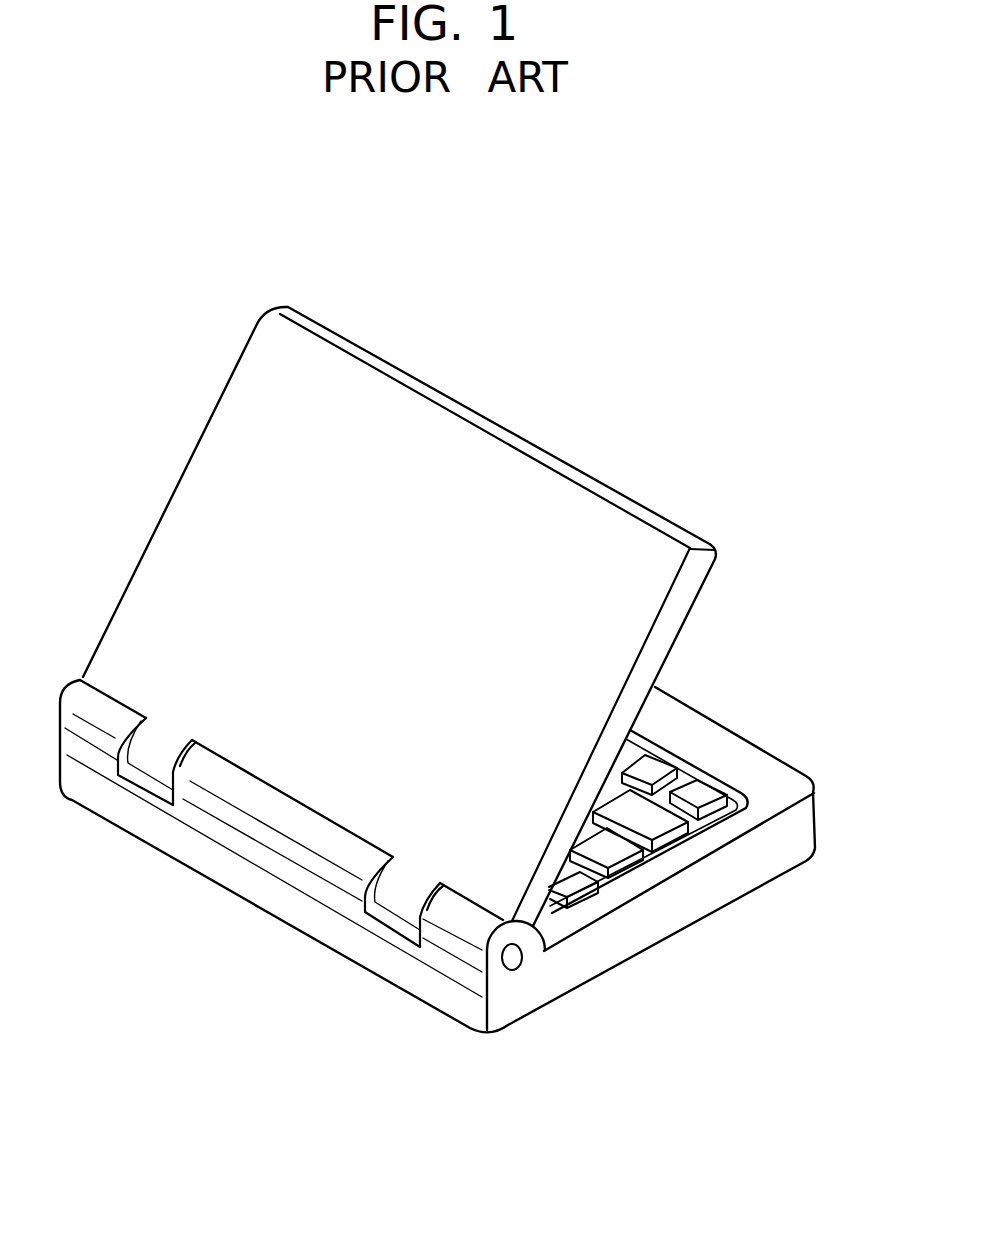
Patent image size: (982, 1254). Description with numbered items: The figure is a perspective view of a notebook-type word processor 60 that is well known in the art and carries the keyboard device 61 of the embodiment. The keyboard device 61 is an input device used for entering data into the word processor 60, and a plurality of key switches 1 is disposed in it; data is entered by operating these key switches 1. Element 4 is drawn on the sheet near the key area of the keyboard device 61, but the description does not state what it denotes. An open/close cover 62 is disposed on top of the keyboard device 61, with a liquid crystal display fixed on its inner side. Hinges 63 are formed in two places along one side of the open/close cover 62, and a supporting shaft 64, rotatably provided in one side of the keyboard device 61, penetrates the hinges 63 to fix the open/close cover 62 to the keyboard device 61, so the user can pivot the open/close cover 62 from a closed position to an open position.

The key switches 1 is at (658, 759).
The keyboard 4 is at (790, 780).
The notebook-type word processor 60 is at (494, 332).
The keyboard device 61 is at (677, 917).
The open/close cover 62 is at (613, 533).
The hinges 63 is at (158, 765).
The supporting shaft 64 is at (520, 967).